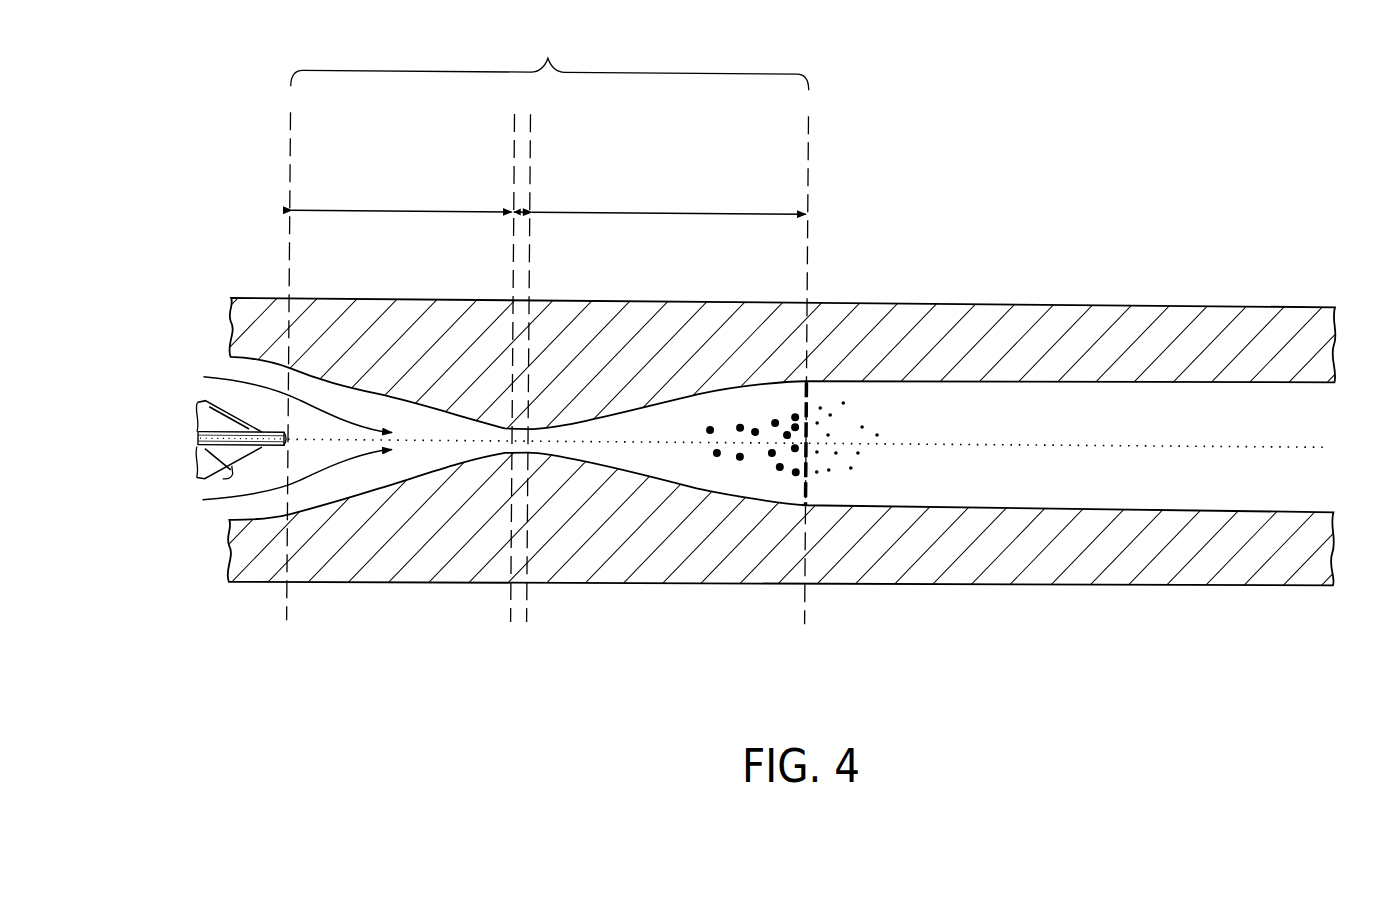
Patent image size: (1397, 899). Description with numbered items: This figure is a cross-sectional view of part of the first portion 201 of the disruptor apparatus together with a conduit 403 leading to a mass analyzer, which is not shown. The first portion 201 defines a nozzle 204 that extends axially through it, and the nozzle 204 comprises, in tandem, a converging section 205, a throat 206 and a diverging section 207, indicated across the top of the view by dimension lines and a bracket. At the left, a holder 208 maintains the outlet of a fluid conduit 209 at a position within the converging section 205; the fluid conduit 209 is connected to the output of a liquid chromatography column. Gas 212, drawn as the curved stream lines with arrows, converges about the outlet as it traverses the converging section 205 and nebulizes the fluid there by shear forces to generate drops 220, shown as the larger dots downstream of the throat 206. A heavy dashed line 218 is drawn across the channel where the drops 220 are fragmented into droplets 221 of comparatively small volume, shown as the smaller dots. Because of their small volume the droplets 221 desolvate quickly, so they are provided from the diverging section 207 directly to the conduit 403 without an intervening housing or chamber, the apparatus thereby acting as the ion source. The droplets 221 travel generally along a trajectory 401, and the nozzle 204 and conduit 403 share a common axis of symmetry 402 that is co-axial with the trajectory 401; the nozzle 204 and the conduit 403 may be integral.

The first portion 201 is at (223, 258).
The nozzle 204 is at (550, 59).
The converging section 205 is at (398, 210).
The throat 206 is at (521, 210).
The diverging section 207 is at (655, 210).
The holder 208 is at (201, 479).
The fluid conduit 209 is at (203, 401).
The gas 212 is at (220, 377).
The shock front 218 is at (806, 485).
The drops 220 is at (770, 450).
The droplets 221 is at (842, 424).
The trajectory 401 is at (806, 529).
The common axis of symmetry 402 is at (1010, 433).
The conduit 403 is at (1004, 276).